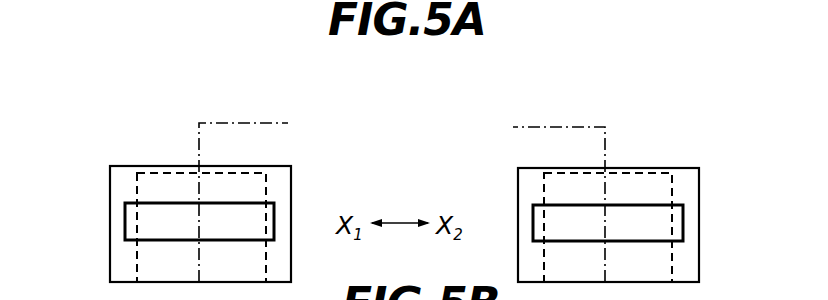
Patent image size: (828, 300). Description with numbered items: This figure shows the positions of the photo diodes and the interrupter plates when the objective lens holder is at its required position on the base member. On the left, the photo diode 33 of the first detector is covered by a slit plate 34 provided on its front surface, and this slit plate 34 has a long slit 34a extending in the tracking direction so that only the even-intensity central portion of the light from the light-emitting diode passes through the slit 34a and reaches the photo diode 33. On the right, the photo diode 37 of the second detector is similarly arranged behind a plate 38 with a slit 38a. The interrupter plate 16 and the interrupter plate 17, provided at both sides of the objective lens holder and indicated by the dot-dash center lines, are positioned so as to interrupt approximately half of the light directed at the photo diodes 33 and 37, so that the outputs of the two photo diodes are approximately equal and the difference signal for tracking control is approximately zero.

The interrupter plate 16 is at (223, 123).
The interrupter plate 17 is at (528, 125).
The photo-diode 33 is at (265, 188).
The slit plate 34 is at (117, 182).
The slit 34a is at (165, 207).
The photo diode 37 is at (633, 185).
The second mounting base 38 is at (686, 185).
The slot of second mounting base 38a is at (652, 240).